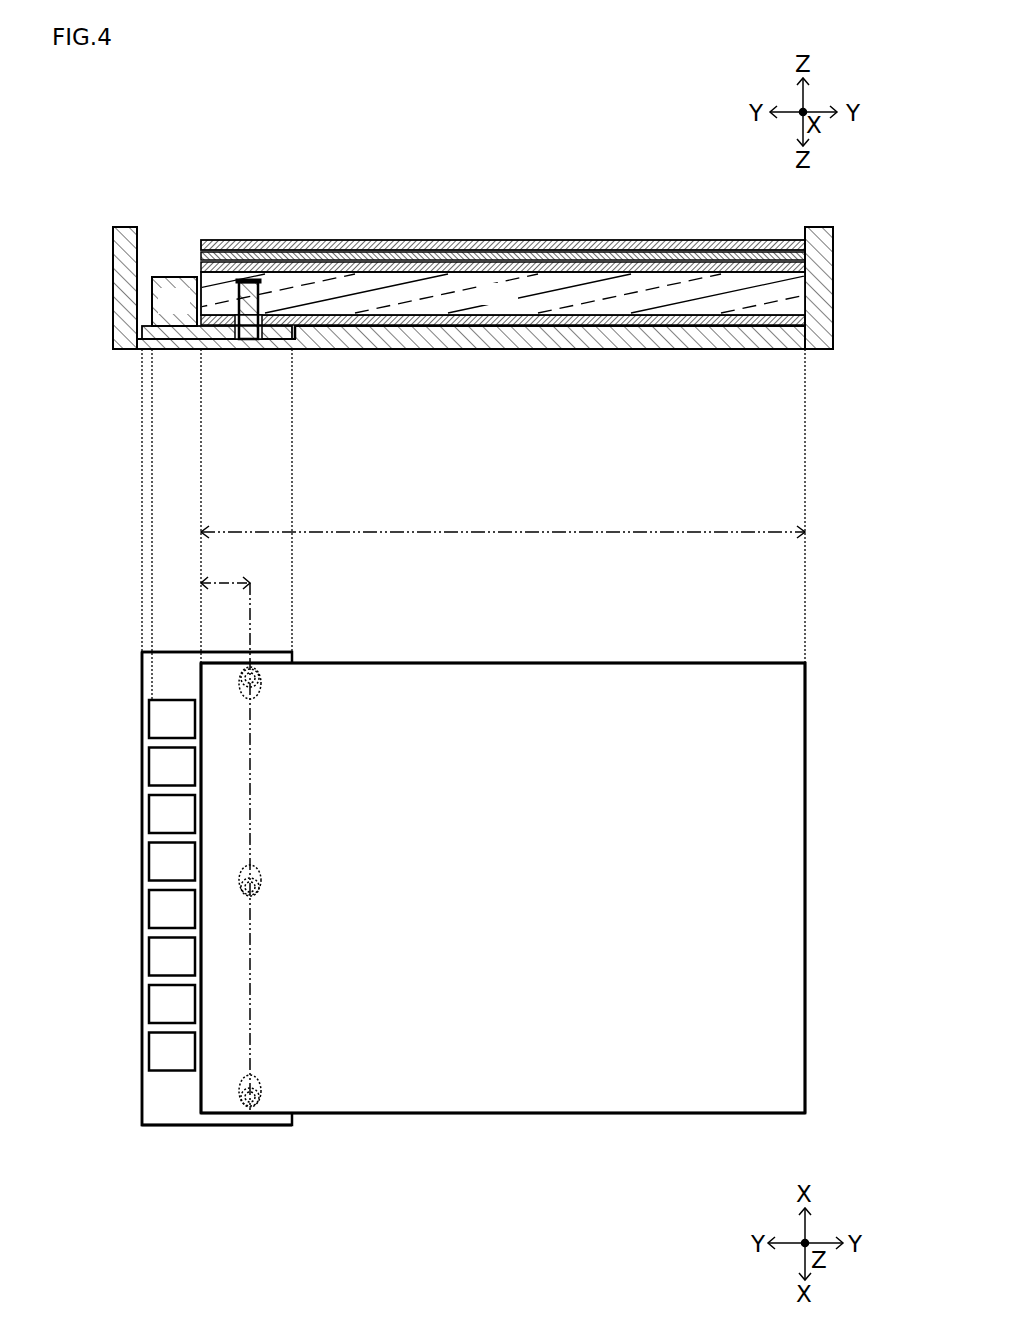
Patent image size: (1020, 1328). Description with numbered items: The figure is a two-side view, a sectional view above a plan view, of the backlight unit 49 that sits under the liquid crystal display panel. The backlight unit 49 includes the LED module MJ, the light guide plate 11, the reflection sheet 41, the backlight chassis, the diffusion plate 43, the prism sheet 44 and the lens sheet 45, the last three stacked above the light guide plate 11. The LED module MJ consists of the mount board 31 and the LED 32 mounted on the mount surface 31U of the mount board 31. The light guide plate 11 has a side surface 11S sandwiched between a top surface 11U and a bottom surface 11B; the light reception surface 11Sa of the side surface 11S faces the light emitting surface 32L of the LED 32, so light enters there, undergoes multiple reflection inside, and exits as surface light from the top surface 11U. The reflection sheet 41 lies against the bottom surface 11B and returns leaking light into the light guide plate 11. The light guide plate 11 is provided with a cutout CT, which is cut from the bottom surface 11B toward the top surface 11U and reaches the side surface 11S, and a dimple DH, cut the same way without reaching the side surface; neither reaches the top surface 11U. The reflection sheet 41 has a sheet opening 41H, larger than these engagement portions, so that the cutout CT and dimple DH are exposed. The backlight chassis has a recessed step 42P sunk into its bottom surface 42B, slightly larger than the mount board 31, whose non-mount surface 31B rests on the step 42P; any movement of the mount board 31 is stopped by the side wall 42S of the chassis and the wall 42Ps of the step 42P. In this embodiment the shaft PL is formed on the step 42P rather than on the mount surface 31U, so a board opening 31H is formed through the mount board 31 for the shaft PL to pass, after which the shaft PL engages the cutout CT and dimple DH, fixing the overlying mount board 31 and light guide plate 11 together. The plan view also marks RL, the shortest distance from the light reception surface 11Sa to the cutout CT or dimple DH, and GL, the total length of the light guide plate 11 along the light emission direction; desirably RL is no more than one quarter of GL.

The backlight unit 49 is at (76, 158).
The side wall 42S is at (140, 198).
The bottom surface 42B is at (490, 351).
The step 42P is at (298, 342).
The wall 42Ps is at (297, 328).
The mount board 31 is at (185, 332).
The mount surface 31U is at (172, 1113).
The non-mount surface 31B is at (237, 1126).
The board opening 31H is at (238, 332).
The sheet opening 41H is at (238, 321).
The LED 32 is at (116, 1170).
The light emitting surface 32L is at (200, 277).
The LED module MJ is at (300, 1203).
The reflection sheet 41 is at (806, 320).
The light guide plate 11 is at (493, 692).
The side surface 11S is at (763, 662).
The light reception surface 11Sa is at (202, 835).
The top surface 11U is at (503, 888).
The bottom surface 11B is at (727, 1114).
The diffusion plate 43 is at (806, 266).
The prism sheet 44 is at (806, 256).
The lens sheet 45 is at (806, 248).
The shaft PL is at (245, 312).
The cutout CT is at (243, 280).
The total length of the light guide plate GL is at (503, 517).
The shortest distance RL is at (225, 572).
The dimple DH is at (227, 846).